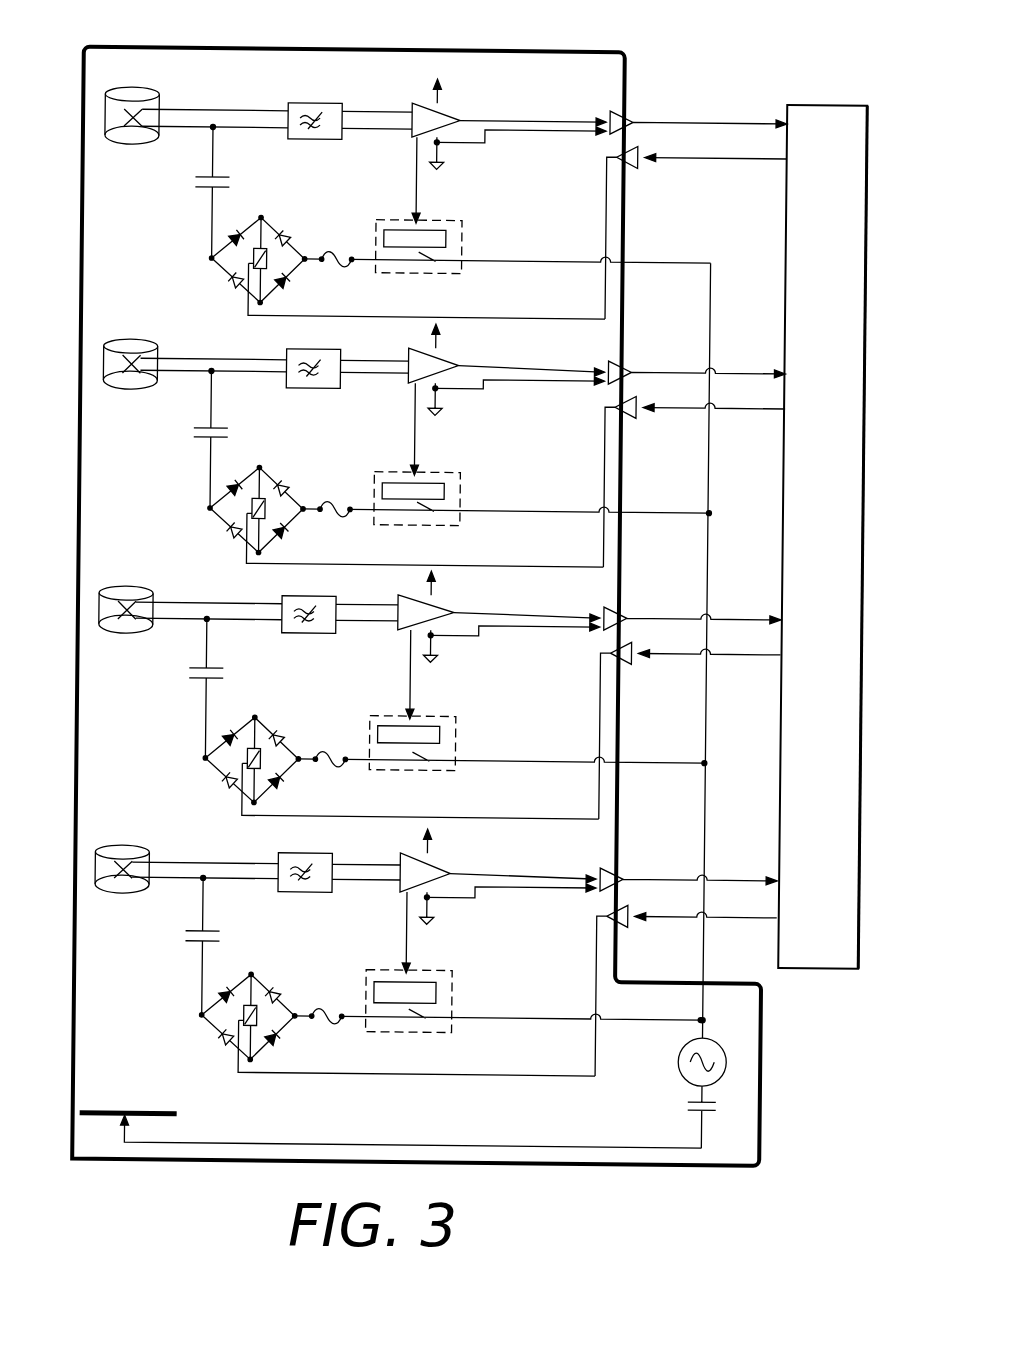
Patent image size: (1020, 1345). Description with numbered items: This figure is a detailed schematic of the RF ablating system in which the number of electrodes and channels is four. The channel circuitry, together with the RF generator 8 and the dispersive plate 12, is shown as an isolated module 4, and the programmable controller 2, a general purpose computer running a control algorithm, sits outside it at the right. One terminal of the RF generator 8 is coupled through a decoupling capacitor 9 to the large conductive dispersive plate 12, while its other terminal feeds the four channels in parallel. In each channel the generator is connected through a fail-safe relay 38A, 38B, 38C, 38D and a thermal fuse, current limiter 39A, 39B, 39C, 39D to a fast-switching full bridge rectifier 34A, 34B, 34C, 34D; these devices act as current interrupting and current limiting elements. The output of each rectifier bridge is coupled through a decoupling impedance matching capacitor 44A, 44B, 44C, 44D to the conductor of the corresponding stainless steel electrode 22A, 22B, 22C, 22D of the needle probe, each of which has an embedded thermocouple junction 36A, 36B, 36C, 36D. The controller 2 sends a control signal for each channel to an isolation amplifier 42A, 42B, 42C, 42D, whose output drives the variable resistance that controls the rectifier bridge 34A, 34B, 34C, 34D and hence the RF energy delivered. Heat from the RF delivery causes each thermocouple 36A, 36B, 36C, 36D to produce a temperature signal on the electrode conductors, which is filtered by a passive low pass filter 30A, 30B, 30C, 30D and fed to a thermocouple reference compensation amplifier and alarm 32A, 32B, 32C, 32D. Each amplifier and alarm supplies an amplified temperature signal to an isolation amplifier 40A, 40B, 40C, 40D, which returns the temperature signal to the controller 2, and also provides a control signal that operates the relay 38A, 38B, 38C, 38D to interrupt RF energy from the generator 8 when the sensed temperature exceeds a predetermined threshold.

The programmable controller 2 is at (818, 105).
The module 4 is at (610, 50).
The RF generator 8 is at (678, 1067).
The decoupling capacitor 9 is at (700, 1112).
The dispersive plate 12 is at (155, 1112).
The electrode 22A is at (140, 92).
The electrode 22B is at (120, 340).
The electrode 22C is at (125, 588).
The electrode 22D is at (152, 793).
The low pass filter 30A is at (297, 102).
The low pass filter 30B is at (306, 348).
The low pass filter 30C is at (308, 595).
The low pass filter 30D is at (302, 855).
The thermocouple reference compensation amplifier and alarm 32A is at (445, 104).
The thermocouple reference compensation amplifier and alarm 32B is at (440, 352).
The thermocouple reference compensation amplifier and alarm 32C is at (440, 602).
The thermocouple reference compensation amplifier and alarm 32D is at (440, 858).
The fast-switching full bridge rectifier 34A is at (274, 219).
The fast-switching full bridge rectifier 34B is at (277, 463).
The fast-switching full bridge rectifier 34C is at (275, 716).
The fast-switching full bridge rectifier 34D is at (308, 922).
The thermocouple junction 36A is at (108, 135).
The thermocouple junction 36B is at (128, 385).
The thermocouple junction 36C is at (126, 632).
The thermocouple junction 36D is at (105, 890).
The fail-safe relay 38A is at (465, 222).
The fail-safe relay 38B is at (453, 472).
The fail-safe relay 38C is at (455, 716).
The fail-safe relay 38D is at (455, 970).
The thermal fuse, current limiter 39A is at (345, 248).
The thermal fuse, current limiter 39B is at (340, 505).
The thermal fuse, current limiter 39C is at (335, 752).
The thermal fuse, current limiter 39D is at (337, 1010).
The isolation amplifier 40A is at (633, 112).
The isolation amplifier 40B is at (628, 362).
The isolation amplifier 40C is at (628, 612).
The isolation amplifier 40D is at (628, 875).
The isolation amplifier 42A is at (636, 167).
The isolation amplifier 42B is at (638, 418).
The isolation amplifier 42C is at (627, 666).
The isolation amplifier 42D is at (632, 928).
The decoupling impedance matching capacitor 44A is at (208, 190).
The decoupling impedance matching capacitor 44B is at (207, 440).
The decoupling impedance matching capacitor 44C is at (207, 680).
The decoupling impedance matching capacitor 44D is at (202, 940).